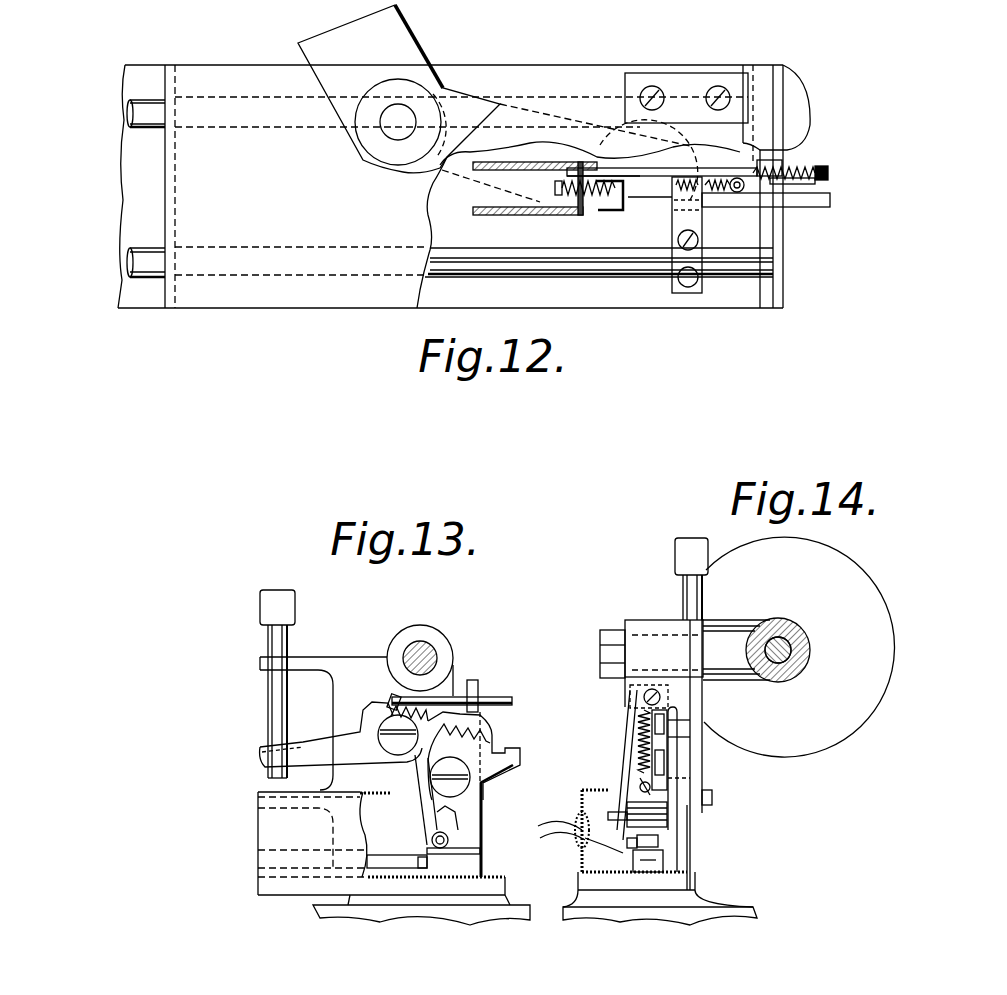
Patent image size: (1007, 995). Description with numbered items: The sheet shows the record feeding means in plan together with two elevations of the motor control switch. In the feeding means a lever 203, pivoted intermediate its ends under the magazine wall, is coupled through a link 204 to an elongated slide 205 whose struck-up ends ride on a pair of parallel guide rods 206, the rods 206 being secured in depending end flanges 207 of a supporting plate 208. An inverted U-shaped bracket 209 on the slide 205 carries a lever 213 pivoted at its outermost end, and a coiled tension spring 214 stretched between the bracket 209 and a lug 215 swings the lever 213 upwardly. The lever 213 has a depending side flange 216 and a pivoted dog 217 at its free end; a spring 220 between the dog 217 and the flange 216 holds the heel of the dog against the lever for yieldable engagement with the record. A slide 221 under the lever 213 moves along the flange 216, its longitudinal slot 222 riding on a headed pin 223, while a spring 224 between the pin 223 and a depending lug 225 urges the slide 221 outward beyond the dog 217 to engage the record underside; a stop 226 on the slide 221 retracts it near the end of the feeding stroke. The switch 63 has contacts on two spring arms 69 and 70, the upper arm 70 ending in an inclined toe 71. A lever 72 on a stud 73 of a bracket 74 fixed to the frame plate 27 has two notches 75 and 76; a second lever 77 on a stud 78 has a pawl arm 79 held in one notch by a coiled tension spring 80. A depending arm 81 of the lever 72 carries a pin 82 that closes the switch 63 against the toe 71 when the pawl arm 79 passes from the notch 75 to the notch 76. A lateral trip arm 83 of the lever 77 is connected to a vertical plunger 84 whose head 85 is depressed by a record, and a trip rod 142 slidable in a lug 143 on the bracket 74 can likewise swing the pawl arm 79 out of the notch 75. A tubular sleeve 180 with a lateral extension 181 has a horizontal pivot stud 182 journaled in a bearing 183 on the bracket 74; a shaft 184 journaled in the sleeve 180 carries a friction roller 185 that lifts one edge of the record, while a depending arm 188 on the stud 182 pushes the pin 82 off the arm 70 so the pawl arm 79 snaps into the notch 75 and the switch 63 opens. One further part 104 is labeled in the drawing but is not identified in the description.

In FIG. 12, the lever 203 is at (400, 33).
In FIG. 12, the link 204 is at (467, 103).
In FIG. 12, the slide 205 is at (299, 303).
In FIG. 12, the guide rods 206 is at (648, 270).
In FIG. 12, the end flanges 207 is at (777, 290).
In FIG. 12, the supporting plate 208 is at (761, 300).
In FIG. 12, the bracket 209 is at (537, 171).
In FIG. 12, the lever 213 is at (643, 197).
In FIG. 12, the coiled tension spring 214 is at (612, 183).
In FIG. 12, the lug 215 is at (548, 193).
In FIG. 12, the side flange 216 is at (740, 177).
In FIG. 12, the dog 217 is at (835, 175).
In FIG. 12, the coiled tension spring 220 is at (802, 172).
In FIG. 12, the slide 221 is at (737, 200).
In FIG. 12, the longitudinal slot 222 is at (717, 195).
In FIG. 12, the headed pin 223 is at (747, 195).
In FIG. 12, the coiled tension spring 224 is at (733, 170).
In FIG. 12, the depending lug 225 is at (666, 195).
In FIG. 12, the stop 226 is at (675, 200).
In FIG. 13, the frame plate 27 is at (493, 917).
In FIG. 14, the frame plate 27 is at (583, 910).
In FIG. 13, the switch 63 is at (430, 860).
In FIG. 14, the switch 63 is at (658, 854).
In FIG. 13, the spring arm 69 is at (387, 877).
In FIG. 14, the spring arm 69 is at (652, 863).
In FIG. 13, the spring arm 70 is at (383, 853).
In FIG. 14, the spring arm 70 is at (660, 842).
In FIG. 13, the toe 71 is at (483, 858).
In FIG. 14, the toe 71 is at (663, 840).
In FIG. 13, the lever 72 is at (485, 795).
In FIG. 13, the stud 73 is at (490, 783).
In FIG. 14, the stud 73 is at (678, 762).
In FIG. 13, the bracket 74 is at (484, 820).
In FIG. 14, the bracket 74 is at (689, 853).
In FIG. 13, the notch 75 is at (423, 758).
In FIG. 13, the notch 76 is at (480, 715).
In FIG. 14, the notch 76 is at (680, 720).
In FIG. 13, the second lever 77 is at (395, 758).
In FIG. 13, the stud 78 is at (387, 742).
In FIG. 13, the pawl arm 79 is at (440, 712).
In FIG. 13, the coiled tension spring 80 is at (490, 740).
In FIG. 14, the coiled tension spring 80 is at (637, 740).
In FIG. 13, the depending arm 81 is at (428, 808).
In FIG. 14, the depending arm 81 is at (667, 810).
In FIG. 13, the pin 82 is at (432, 838).
In FIG. 14, the pin 82 is at (648, 789).
In FIG. 13, the lateral trip arm 83 is at (313, 747).
In FIG. 13, the vertical plunger 84 is at (288, 692).
In FIG. 14, the vertical plunger 84 is at (703, 600).
In FIG. 13, the head 85 is at (296, 612).
In FIG. 14, the head 85 is at (685, 538).
In FIG. 13, the tip 104 is at (388, 693).
In FIG. 13, the trip rod 142 is at (512, 700).
In FIG. 13, the lug 143 is at (482, 688).
In FIG. 14, the tubular sleeve 180 is at (795, 630).
In FIG. 14, the lateral extension 181 is at (747, 627).
In FIG. 13, the horizontal pivot stud 182 is at (432, 643).
In FIG. 14, the horizontal pivot stud 182 is at (612, 633).
In FIG. 13, the bearing 183 is at (422, 632).
In FIG. 14, the bearing 183 is at (657, 623).
In FIG. 14, the shaft 184 is at (790, 647).
In FIG. 14, the friction roller 185 is at (850, 563).
In FIG. 14, the depending arm 188 is at (618, 762).